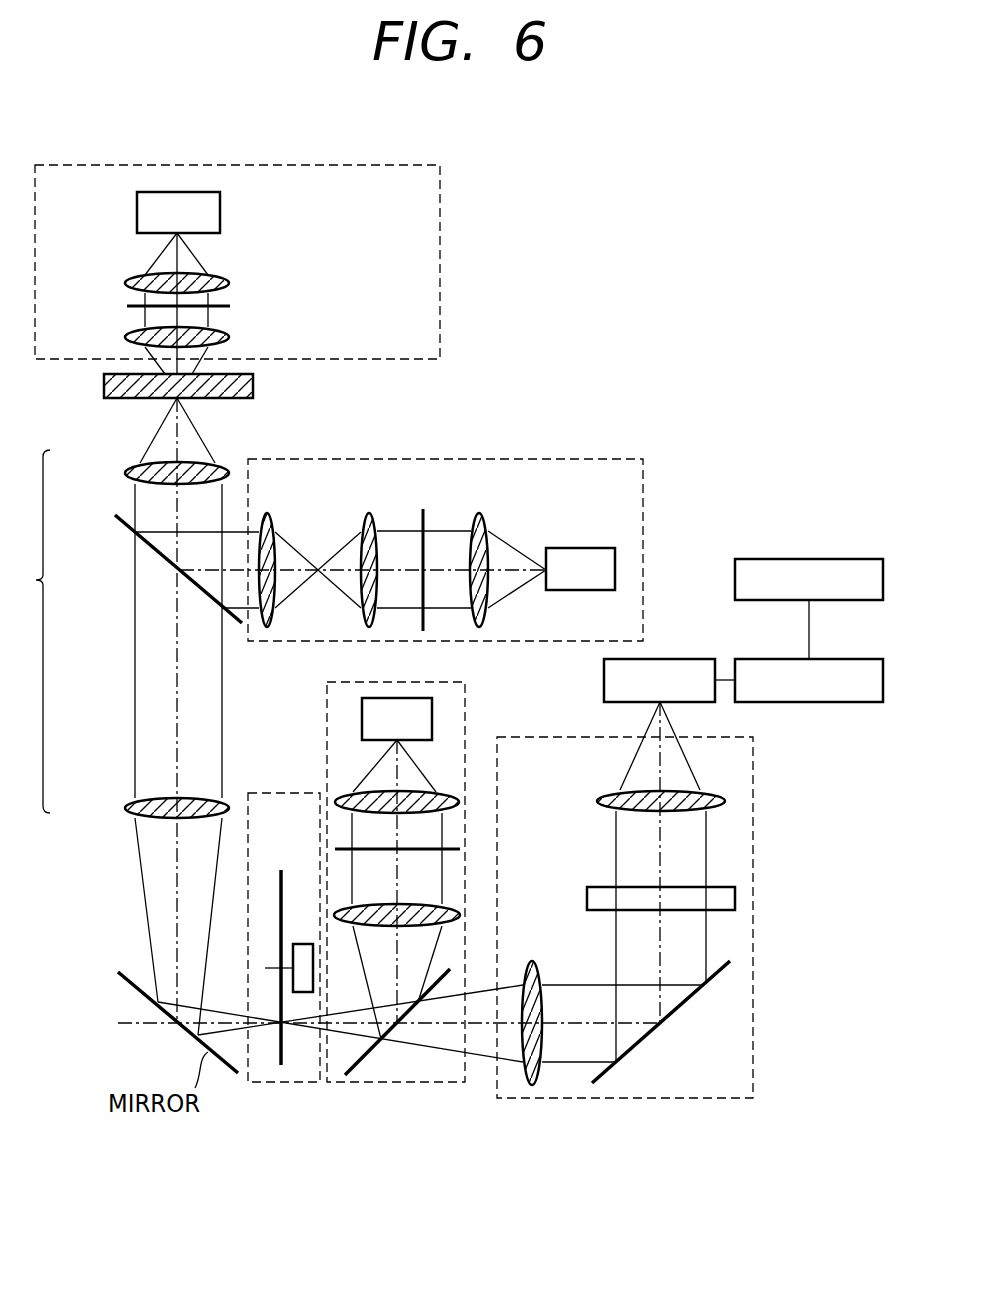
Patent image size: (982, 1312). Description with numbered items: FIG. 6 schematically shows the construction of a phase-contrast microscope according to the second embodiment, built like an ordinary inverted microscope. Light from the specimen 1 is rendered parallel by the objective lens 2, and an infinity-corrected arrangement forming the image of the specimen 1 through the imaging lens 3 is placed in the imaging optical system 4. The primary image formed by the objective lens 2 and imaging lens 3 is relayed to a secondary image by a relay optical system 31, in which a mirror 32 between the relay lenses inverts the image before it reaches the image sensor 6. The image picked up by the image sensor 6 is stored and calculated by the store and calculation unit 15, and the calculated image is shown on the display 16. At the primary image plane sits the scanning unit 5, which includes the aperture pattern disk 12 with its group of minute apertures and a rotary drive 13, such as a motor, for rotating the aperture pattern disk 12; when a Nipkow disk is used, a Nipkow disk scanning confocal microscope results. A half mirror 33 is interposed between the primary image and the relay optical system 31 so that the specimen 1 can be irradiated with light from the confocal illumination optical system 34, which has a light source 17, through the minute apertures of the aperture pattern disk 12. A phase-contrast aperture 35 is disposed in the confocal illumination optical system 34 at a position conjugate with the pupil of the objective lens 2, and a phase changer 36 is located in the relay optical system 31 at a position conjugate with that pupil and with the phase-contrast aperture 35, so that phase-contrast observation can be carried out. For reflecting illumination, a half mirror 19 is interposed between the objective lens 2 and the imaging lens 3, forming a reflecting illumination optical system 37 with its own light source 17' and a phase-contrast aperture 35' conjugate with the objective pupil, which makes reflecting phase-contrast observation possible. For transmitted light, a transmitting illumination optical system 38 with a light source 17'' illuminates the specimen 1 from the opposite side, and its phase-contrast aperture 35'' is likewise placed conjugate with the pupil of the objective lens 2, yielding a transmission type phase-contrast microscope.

The specimen 1 is at (230, 405).
The objective lens 2 is at (128, 470).
The imaging lens 3 is at (126, 805).
The imaging optical system 4 is at (32, 631).
The scanning unit 5 is at (270, 1082).
The image sensor 6 is at (672, 659).
The aperture pattern disk 12 is at (280, 882).
The rotary drive 13 is at (297, 943).
The store and calculation unit 15 is at (837, 659).
The display 16 is at (837, 559).
The light source 17 is at (439, 718).
The light source 17' is at (584, 546).
The light source 17'' is at (209, 208).
The half mirror 19 is at (120, 527).
The relay optical system 31 is at (753, 782).
The mirror 32 is at (684, 1003).
The half mirror 33 is at (372, 1050).
The confocal illumination optical system 34 is at (383, 1082).
The phase-contrast aperture 35 is at (437, 832).
The phase-contrast aperture 35' is at (449, 555).
The phase-contrast aperture 35'' is at (205, 294).
The phase changer 36 is at (587, 893).
The reflecting illumination optical system 37 is at (590, 459).
The transmitting illumination optical system 38 is at (440, 203).